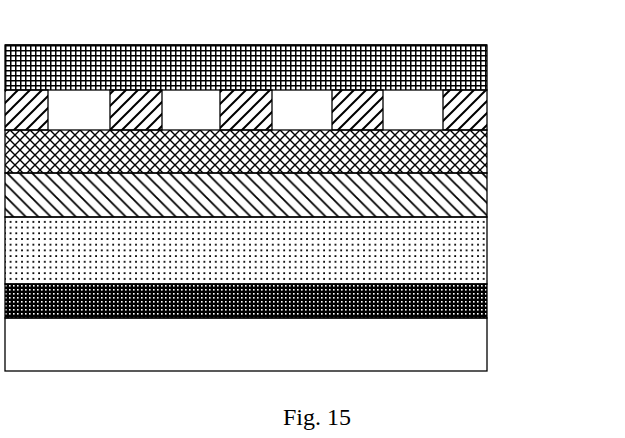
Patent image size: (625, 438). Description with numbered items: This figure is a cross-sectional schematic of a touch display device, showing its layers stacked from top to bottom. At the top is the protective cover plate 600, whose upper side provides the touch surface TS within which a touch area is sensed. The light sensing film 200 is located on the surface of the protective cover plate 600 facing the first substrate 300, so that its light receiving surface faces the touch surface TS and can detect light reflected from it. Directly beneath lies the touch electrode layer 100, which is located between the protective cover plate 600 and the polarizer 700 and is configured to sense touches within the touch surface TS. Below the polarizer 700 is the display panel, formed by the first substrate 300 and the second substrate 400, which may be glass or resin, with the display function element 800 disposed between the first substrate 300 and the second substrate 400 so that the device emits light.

The touch surface TS is at (260, 45).
The protective cover plate 600 is at (487, 73).
The light sensing film 200 is at (487, 102).
The touch electrode layer 100 is at (487, 157).
The polarizer 700 is at (487, 203).
The first substrate 300 is at (487, 252).
The display function element 800 is at (487, 307).
The second substrate 400 is at (487, 357).